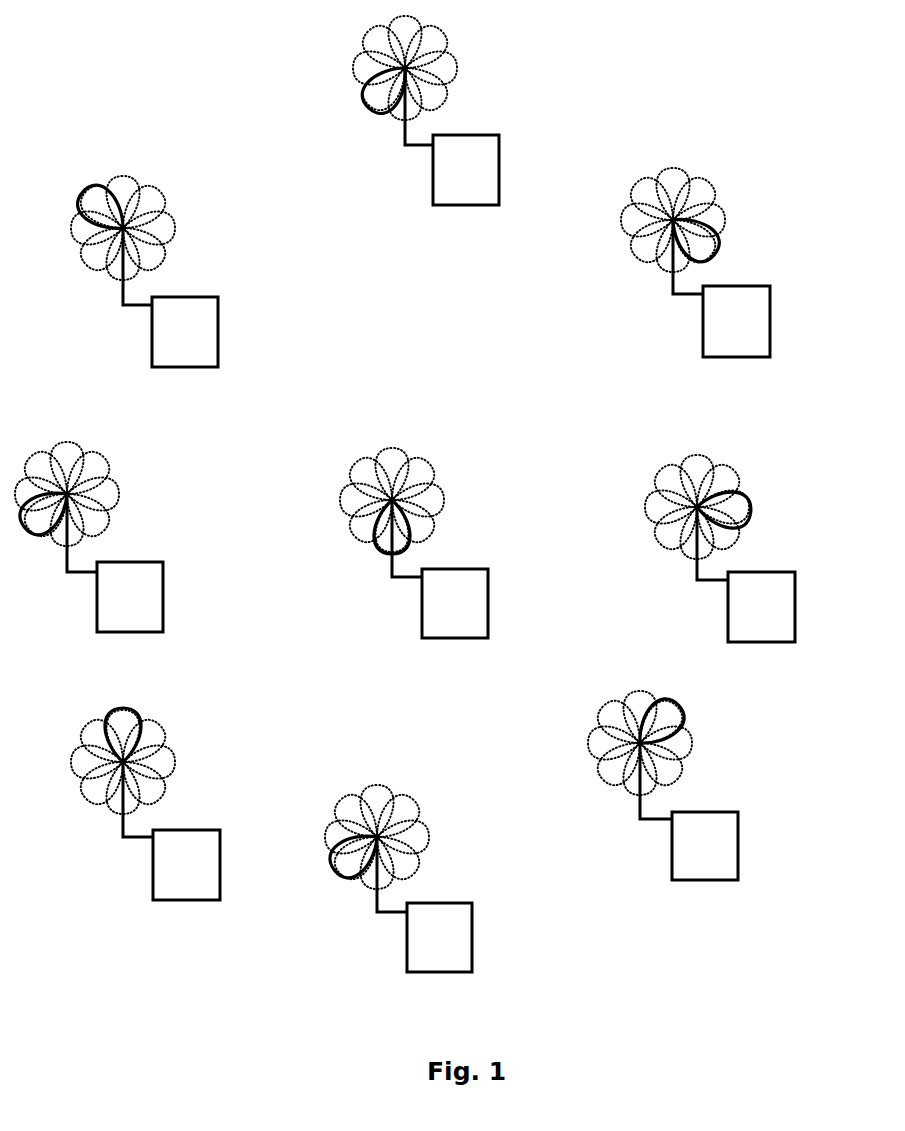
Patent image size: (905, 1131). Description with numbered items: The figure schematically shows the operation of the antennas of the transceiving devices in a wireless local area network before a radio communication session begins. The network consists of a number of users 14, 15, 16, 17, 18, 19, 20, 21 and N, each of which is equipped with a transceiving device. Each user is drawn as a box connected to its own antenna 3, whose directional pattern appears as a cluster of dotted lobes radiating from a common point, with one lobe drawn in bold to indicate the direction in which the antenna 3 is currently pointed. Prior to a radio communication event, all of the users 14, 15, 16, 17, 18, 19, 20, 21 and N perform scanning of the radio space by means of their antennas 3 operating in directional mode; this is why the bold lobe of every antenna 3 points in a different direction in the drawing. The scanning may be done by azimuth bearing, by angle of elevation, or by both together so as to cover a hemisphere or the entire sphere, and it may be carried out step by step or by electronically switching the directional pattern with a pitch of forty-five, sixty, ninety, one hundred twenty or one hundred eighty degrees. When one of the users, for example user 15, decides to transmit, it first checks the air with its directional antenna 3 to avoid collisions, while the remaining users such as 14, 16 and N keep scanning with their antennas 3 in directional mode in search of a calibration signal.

The antenna 3 is at (440, 67).
The user 14 is at (193, 307).
The user 15 is at (148, 583).
The user 16 is at (208, 853).
The user 17 is at (458, 942).
The user 18 is at (727, 840).
The user 19 is at (772, 580).
The user 20 is at (743, 293).
The user 21 is at (483, 152).
The user N is at (478, 595).